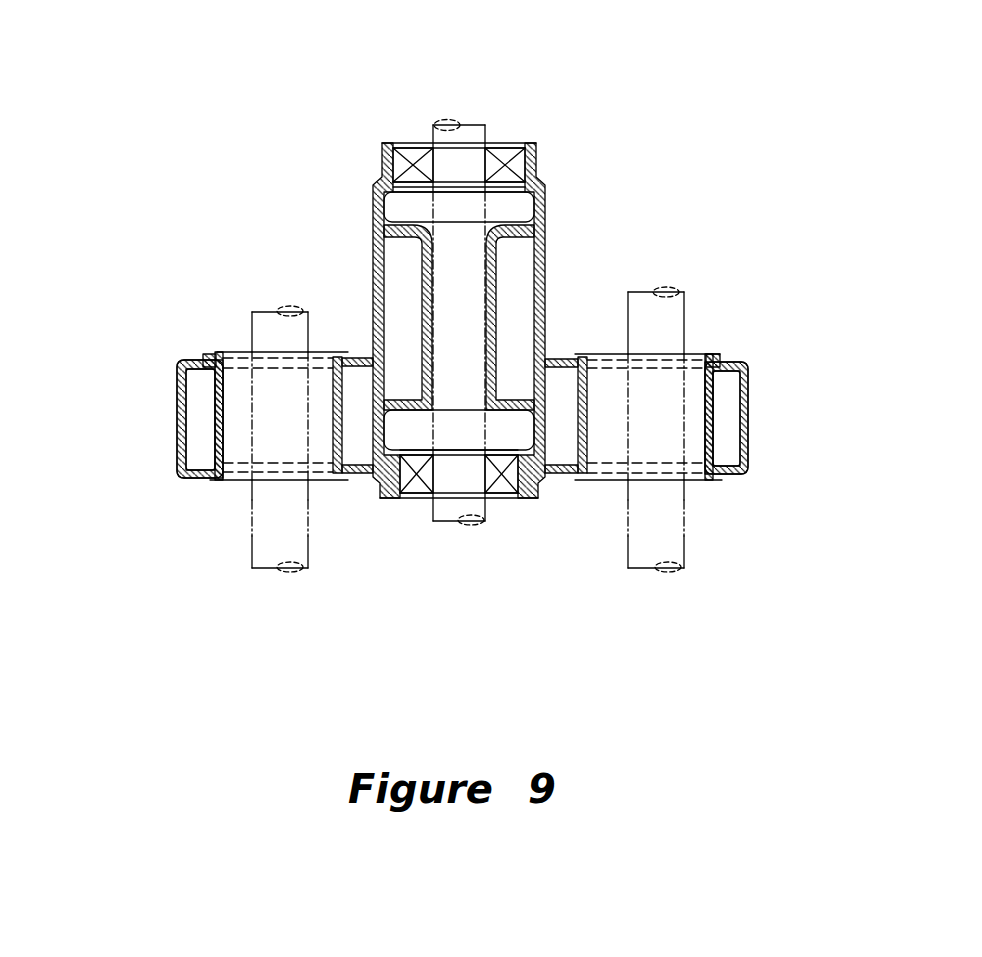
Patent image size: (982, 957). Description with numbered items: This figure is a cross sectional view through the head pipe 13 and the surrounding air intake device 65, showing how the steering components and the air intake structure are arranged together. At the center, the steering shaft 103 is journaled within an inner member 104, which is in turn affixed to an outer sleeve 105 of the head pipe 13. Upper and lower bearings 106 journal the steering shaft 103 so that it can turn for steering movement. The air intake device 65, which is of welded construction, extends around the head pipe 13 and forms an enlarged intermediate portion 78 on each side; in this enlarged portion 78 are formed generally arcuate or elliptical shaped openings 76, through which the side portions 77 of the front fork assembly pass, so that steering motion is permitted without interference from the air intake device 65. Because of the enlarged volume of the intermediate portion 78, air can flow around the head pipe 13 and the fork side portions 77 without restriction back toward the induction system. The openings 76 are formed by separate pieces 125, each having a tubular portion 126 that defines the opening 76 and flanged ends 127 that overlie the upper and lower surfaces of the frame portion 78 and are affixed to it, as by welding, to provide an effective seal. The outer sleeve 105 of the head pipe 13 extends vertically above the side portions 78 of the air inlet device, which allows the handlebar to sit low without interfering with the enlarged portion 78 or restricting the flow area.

The head pipe 13 is at (347, 188).
The air intake device 65 is at (745, 334).
The openings 76 is at (238, 483).
The side portions 77 is at (252, 312).
The enlarged intermediate portion 78 is at (180, 427).
The steering shaft 103 is at (470, 125).
The inner member 104 is at (425, 265).
The outer sleeve 105 is at (412, 157).
The upper and lower bearings 106 is at (415, 483).
The separate pieces 125 is at (203, 352).
The tubular portions 126 is at (187, 389).
The flanged ends 127 is at (340, 350).